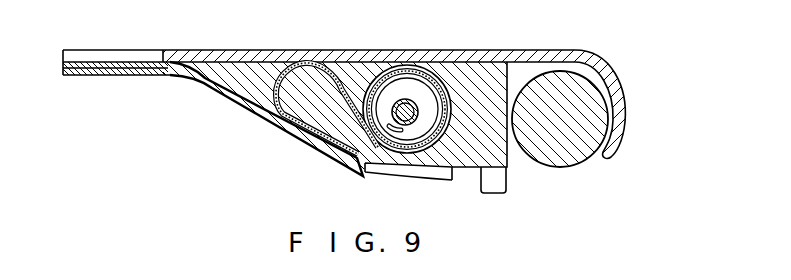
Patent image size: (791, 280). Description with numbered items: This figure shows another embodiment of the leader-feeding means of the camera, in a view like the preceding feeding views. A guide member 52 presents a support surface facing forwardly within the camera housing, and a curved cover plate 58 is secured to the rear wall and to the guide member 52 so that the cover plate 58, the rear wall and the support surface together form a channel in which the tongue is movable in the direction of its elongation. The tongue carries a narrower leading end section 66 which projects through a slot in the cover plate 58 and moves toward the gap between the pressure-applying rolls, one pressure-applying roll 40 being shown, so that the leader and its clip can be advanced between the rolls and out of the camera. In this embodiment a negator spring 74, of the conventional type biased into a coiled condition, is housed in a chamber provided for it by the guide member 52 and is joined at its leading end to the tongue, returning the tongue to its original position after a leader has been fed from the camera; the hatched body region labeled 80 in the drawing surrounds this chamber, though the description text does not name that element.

The pressure-applying roll 40 is at (588, 108).
The guide member 52 is at (500, 152).
The cover plate 58 is at (255, 119).
The leading end section 66 is at (364, 174).
The negator spring 74 is at (343, 88).
The body block 80 is at (363, 77).